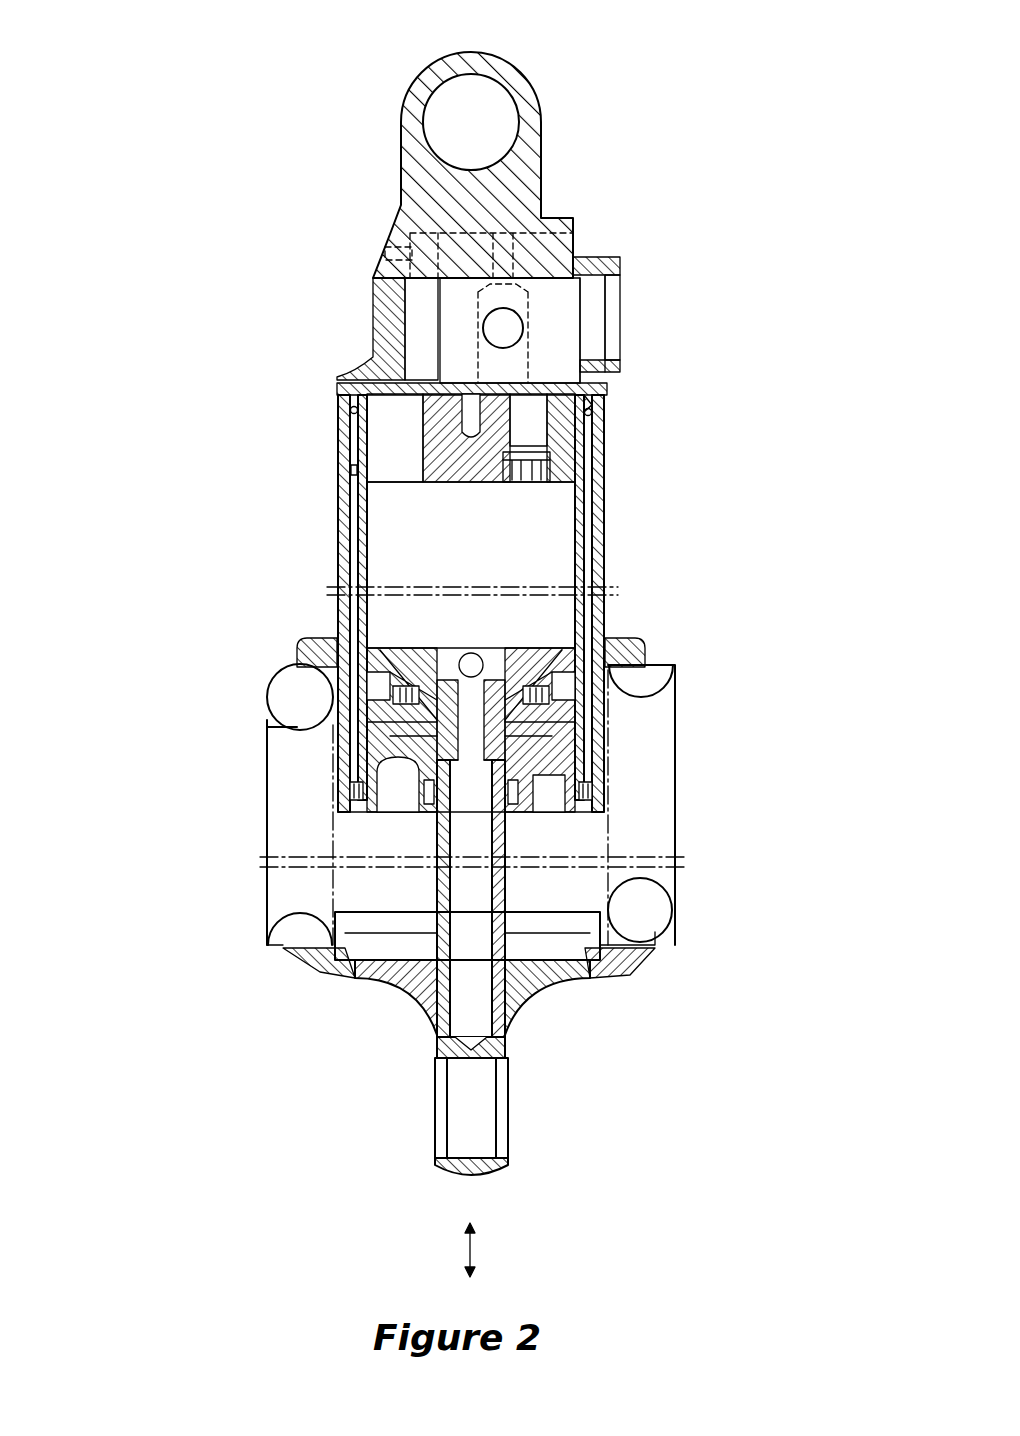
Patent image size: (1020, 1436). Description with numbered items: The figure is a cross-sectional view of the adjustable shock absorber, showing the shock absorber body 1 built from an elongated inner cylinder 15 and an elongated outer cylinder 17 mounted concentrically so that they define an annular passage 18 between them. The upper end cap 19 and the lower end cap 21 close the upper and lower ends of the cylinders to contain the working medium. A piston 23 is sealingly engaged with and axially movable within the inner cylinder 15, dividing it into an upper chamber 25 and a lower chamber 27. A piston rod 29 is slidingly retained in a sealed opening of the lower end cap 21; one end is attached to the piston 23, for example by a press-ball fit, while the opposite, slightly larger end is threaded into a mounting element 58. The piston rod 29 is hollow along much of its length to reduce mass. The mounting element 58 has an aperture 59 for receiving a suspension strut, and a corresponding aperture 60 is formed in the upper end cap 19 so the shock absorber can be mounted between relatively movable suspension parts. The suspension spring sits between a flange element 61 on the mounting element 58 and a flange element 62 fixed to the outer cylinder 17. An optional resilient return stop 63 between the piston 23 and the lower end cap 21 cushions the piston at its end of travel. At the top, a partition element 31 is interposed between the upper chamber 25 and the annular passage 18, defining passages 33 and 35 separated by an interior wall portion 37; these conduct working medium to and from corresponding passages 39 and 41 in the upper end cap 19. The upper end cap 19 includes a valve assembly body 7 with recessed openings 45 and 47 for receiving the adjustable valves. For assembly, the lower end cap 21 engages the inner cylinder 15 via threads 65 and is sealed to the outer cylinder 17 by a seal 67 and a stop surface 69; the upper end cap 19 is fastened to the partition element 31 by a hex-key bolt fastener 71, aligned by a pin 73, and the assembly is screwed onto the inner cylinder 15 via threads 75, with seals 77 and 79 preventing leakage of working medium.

The shock absorber body 1 is at (250, 488).
The valve assembly body 7 is at (252, 237).
The inner cylinder 15 is at (583, 538).
The outer cylinder 17 is at (600, 565).
The annular passage 18 is at (345, 695).
The upper end cap 19 is at (398, 142).
The lower end cap 21 is at (603, 797).
The piston 23 is at (417, 690).
The upper chamber 25 is at (565, 502).
The lower chamber 27 is at (578, 727).
The piston rod 29 is at (512, 977).
The partition element 31 is at (375, 395).
The passage 33 is at (385, 458).
The passage 35 is at (585, 375).
The interior wall portion 37 is at (565, 403).
The passage 39 is at (373, 283).
The passage 41 is at (560, 275).
The recessed opening 45 is at (632, 280).
The recessed opening 47 is at (612, 236).
The mounting element 58 is at (512, 1047).
The aperture 59 is at (455, 1120).
The aperture 60 is at (462, 97).
The flange element 61 is at (620, 957).
The flange element 62 is at (317, 650).
The return stop 63 is at (417, 738).
The threads 65 is at (574, 793).
The seal 67 is at (343, 797).
The stop surface 69 is at (347, 772).
The hex-key bolt fastener 71 is at (543, 485).
The pin 73 is at (420, 438).
The threads 75 is at (592, 365).
The seal 77 is at (600, 388).
The seal 79 is at (363, 470).